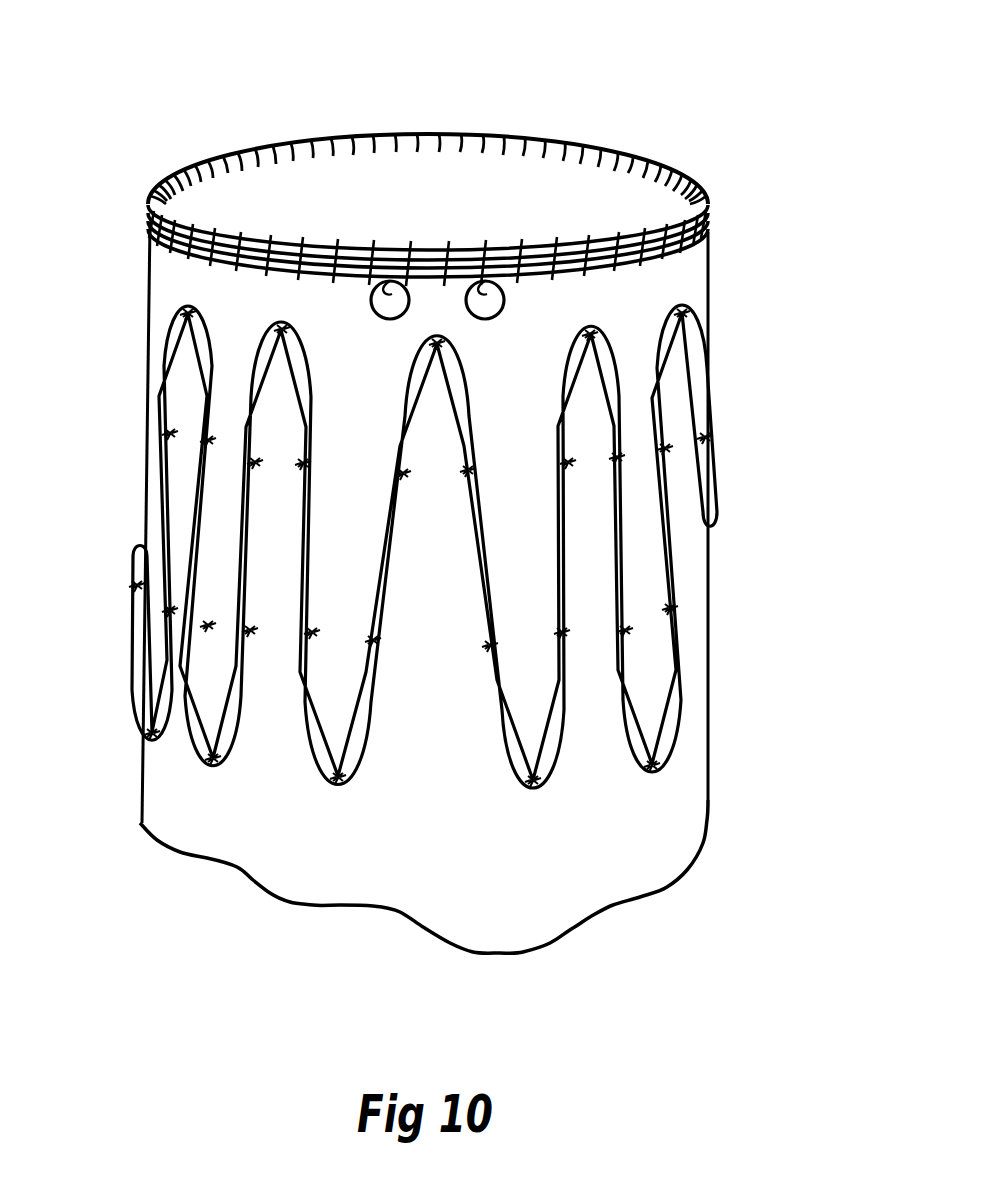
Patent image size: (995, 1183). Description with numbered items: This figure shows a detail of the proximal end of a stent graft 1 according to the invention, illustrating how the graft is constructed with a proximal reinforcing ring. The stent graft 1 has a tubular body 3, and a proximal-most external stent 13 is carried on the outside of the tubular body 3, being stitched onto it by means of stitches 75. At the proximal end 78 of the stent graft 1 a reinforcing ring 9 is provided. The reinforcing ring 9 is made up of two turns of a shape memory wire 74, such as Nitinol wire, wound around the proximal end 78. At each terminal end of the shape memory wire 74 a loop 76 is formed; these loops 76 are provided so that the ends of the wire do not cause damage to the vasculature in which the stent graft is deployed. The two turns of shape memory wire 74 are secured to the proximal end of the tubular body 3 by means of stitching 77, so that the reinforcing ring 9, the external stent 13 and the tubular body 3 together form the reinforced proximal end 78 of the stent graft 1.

The stent graft 1 is at (467, 62).
The tubular body 3 is at (178, 782).
The reinforcing ring 9 is at (710, 212).
The proximal-most external stent 13 is at (677, 550).
The shape memory wire 74 is at (182, 262).
The stitches 75 is at (680, 608).
The loops 76 is at (504, 294).
The stitching 77 is at (253, 143).
The proximal end 78 is at (659, 137).